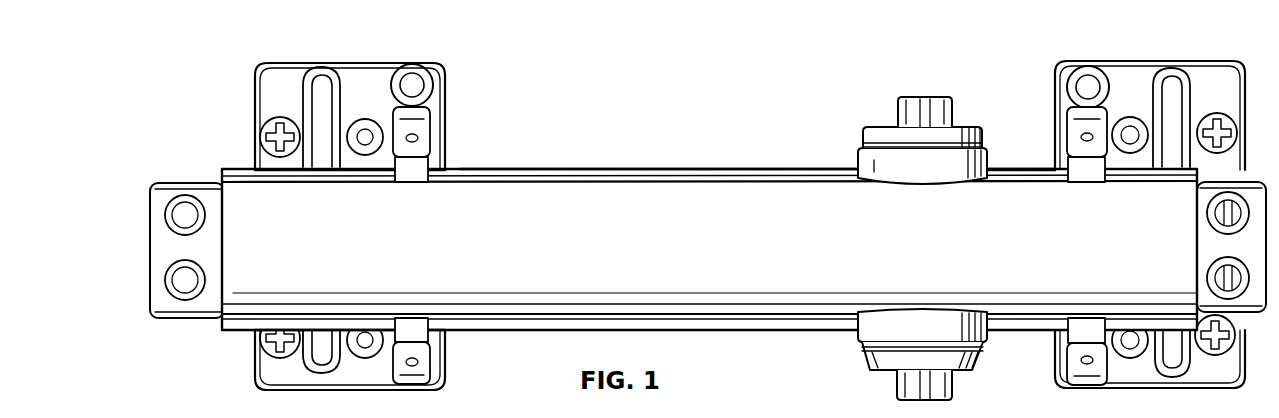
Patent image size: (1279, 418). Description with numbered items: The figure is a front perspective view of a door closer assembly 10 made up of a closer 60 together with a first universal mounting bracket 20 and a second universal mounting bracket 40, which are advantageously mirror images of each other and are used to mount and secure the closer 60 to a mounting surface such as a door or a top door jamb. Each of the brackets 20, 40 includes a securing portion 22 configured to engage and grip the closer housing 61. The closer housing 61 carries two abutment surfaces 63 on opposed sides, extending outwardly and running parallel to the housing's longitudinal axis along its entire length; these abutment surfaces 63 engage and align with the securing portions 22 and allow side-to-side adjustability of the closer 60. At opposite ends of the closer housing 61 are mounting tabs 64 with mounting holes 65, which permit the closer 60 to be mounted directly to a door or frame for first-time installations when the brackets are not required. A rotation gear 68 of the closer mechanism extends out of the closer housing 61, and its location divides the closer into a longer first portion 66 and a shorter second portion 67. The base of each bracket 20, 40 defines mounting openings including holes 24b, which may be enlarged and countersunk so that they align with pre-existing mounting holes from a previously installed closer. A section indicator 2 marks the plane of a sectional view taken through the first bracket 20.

The section line 2- 2 is at (412, 417).
The door closer assembly 10 is at (774, 118).
The first universal mounting bracket 20 is at (438, 70).
The securing portion 22 is at (432, 132).
The second universal mounting bracket 40 is at (1066, 62).
The closer 60 is at (657, 143).
The closer housing 61 is at (856, 165).
The abutment surfaces 63 is at (255, 175).
The mounting tabs 64 is at (196, 319).
The mounting holes 65 is at (171, 303).
The first portion 66 is at (710, 168).
The second portion 67 is at (1003, 162).
The rotation gear 68 is at (913, 97).
The mounting holes 24b is at (729, 417).